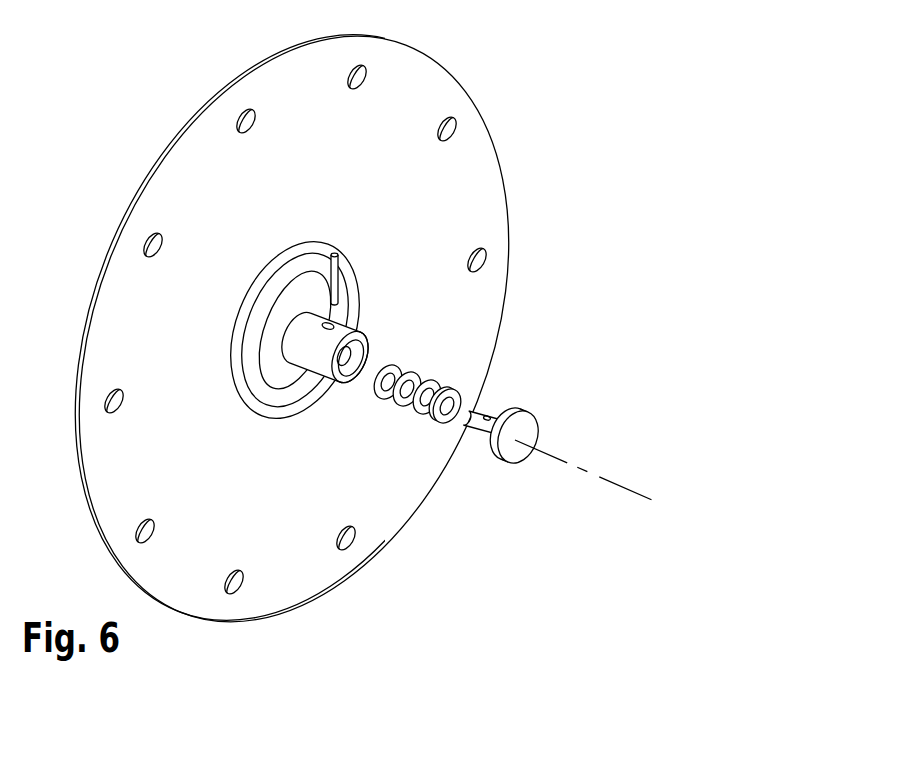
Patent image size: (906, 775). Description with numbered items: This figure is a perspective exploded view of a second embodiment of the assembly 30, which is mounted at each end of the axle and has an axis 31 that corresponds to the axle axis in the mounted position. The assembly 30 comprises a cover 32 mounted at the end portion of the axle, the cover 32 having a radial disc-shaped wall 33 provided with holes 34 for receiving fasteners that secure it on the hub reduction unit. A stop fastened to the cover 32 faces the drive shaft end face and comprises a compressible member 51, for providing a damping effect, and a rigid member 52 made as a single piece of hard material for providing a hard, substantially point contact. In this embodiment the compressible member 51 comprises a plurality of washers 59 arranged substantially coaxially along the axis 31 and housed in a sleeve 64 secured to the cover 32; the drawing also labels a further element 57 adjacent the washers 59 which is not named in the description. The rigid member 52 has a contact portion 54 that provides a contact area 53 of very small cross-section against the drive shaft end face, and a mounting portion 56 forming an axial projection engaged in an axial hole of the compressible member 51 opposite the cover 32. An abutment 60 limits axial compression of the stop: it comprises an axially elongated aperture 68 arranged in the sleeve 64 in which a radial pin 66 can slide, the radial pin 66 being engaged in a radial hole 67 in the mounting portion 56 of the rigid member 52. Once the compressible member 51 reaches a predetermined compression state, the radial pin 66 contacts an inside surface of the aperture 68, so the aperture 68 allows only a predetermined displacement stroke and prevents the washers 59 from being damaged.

The assembly 30 is at (509, 64).
The axis 31 is at (632, 493).
The cover 32 is at (160, 154).
The radial disc-shaped wall 33 is at (457, 170).
The holes 34 is at (441, 130).
The compressible member 51 is at (394, 417).
The rigid member 52 is at (546, 436).
The contact area 53 is at (515, 440).
The contact portion 54 is at (522, 422).
The mounting portion 56 is at (482, 428).
The washer 57 is at (447, 410).
The washer 59 is at (408, 373).
The abutment 60 is at (296, 383).
The sleeve 64 is at (297, 343).
The radial pin 66 is at (336, 273).
The radial hole 67 is at (487, 416).
The axially elongated aperture 68 is at (331, 327).